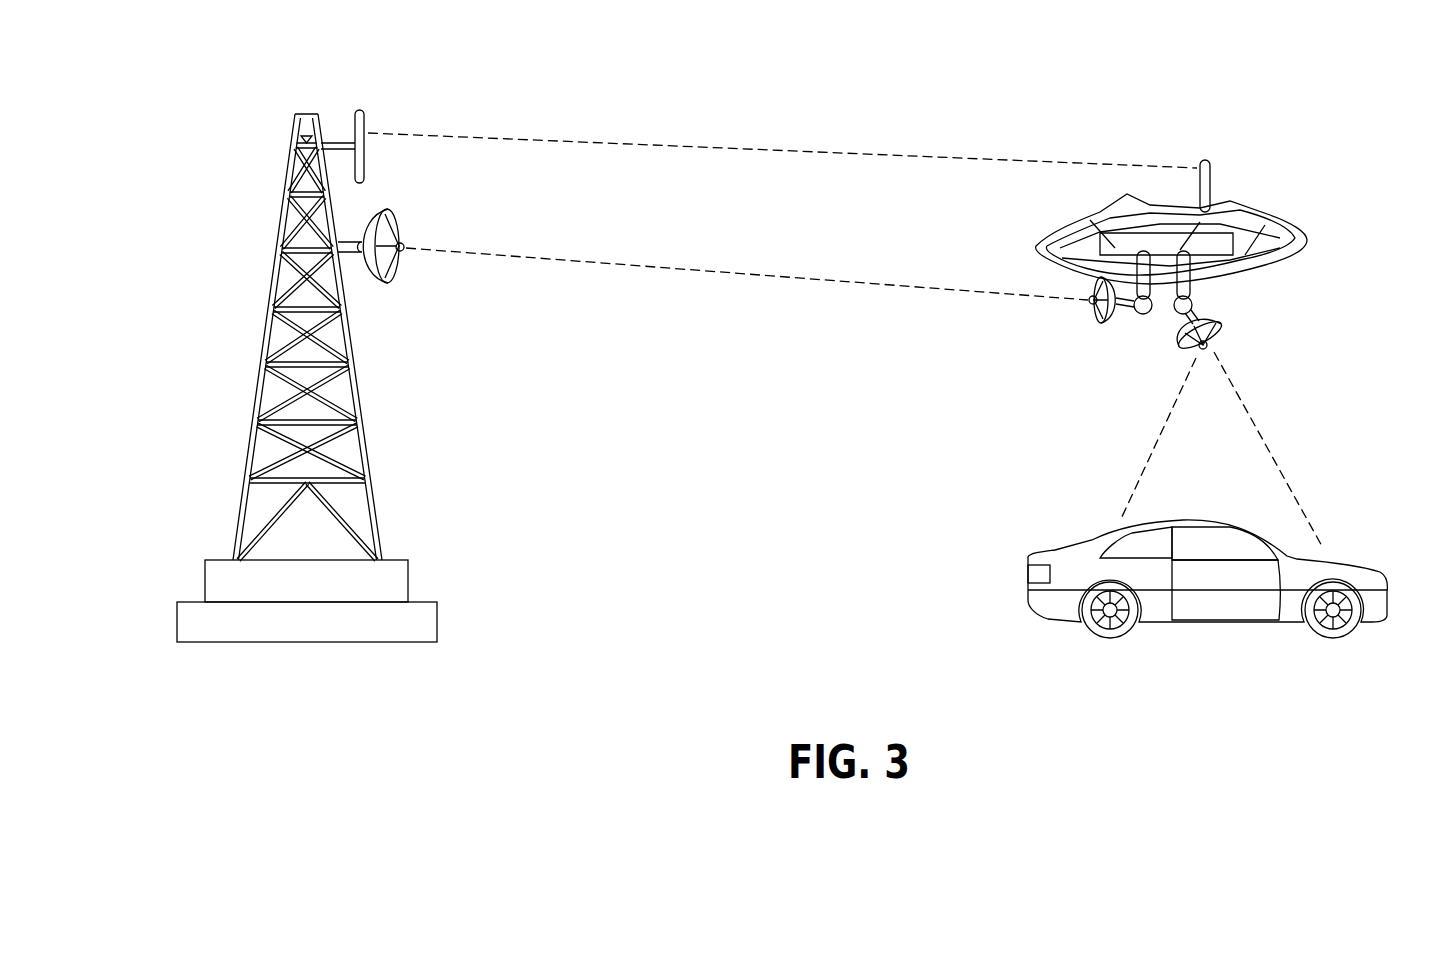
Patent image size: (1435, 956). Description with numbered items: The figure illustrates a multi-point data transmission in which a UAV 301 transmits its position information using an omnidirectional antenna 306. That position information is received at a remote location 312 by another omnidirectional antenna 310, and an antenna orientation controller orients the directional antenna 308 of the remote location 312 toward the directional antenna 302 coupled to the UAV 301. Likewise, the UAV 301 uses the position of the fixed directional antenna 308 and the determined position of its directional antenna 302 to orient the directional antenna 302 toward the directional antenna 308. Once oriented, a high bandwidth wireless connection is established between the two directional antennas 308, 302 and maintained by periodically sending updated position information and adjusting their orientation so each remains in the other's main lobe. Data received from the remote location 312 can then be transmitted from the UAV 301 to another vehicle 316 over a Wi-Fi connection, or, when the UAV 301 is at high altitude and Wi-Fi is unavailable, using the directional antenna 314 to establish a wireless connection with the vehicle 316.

The UAV 301 is at (1268, 212).
The directional antenna 302 is at (1090, 305).
The omnidirectional antenna 306 is at (1212, 170).
The directional antenna 308 is at (398, 273).
The omnidirectional antenna 310 is at (367, 123).
The remote location 312 is at (291, 153).
The directional antenna 314 is at (1220, 332).
The vehicle 316 is at (1343, 572).